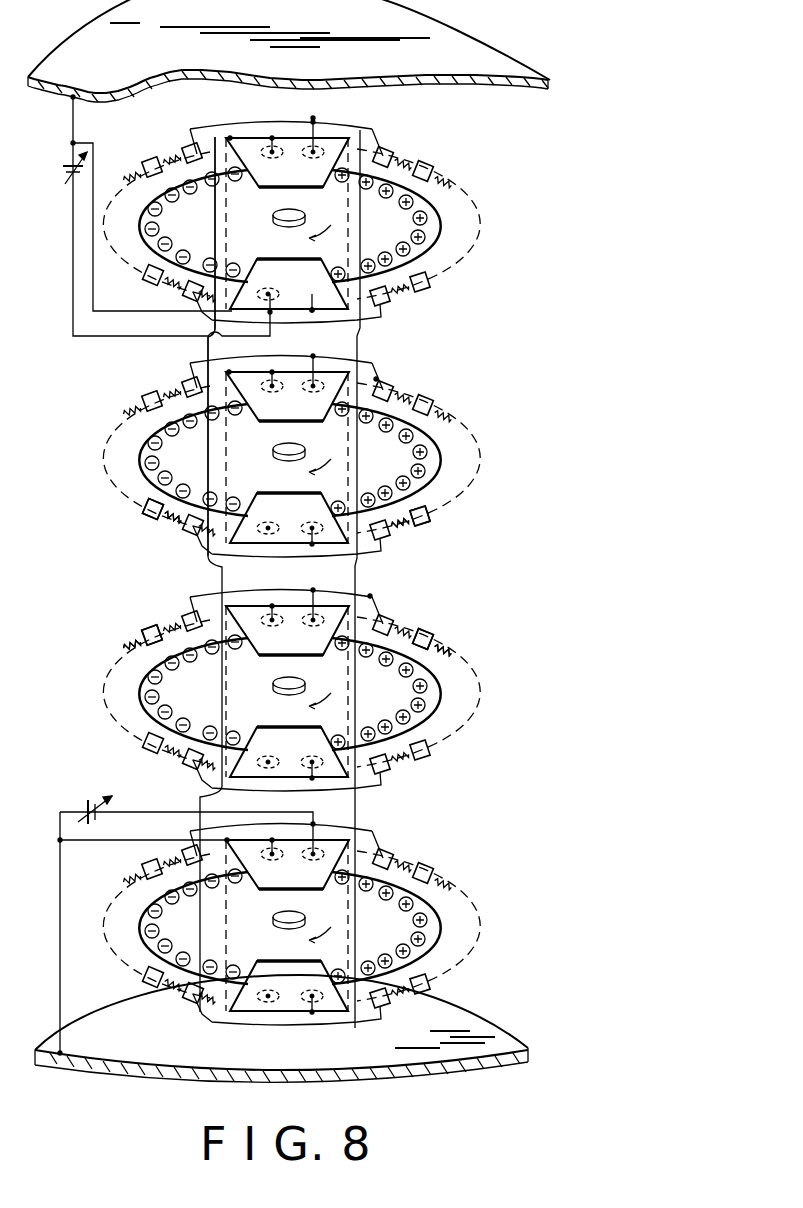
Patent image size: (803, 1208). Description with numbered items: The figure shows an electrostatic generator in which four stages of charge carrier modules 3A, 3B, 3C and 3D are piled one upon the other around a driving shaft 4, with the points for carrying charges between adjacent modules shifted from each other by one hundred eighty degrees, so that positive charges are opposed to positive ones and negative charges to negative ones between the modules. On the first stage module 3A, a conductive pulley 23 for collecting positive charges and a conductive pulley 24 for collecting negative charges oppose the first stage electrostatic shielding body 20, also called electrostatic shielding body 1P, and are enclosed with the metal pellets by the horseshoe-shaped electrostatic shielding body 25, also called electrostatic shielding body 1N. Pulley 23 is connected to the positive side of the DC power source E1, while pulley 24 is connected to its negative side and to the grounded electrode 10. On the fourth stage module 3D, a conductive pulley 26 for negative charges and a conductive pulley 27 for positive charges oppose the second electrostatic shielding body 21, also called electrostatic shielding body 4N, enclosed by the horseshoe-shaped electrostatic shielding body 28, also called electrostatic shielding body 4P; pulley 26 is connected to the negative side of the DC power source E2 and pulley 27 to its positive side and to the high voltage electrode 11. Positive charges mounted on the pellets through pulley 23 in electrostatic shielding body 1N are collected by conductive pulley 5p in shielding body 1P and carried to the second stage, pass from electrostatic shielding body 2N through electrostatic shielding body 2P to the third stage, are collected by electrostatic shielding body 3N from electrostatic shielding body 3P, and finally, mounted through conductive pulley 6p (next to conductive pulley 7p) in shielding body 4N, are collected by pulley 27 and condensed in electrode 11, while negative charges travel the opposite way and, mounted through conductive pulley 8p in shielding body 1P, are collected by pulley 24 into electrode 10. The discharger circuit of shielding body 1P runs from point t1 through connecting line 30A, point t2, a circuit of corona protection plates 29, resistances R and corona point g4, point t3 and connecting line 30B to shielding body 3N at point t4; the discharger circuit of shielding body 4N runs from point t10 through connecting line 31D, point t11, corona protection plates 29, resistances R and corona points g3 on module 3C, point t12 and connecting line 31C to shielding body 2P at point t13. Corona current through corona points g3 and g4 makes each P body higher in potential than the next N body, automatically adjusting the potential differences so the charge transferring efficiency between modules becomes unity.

The grounded electrode 10 is at (281, 1044).
The high voltage electrode 11 is at (480, 87).
The charge carrier module 3A is at (392, 936).
The charge carrier module 3B is at (345, 692).
The charge carrier module 3C is at (398, 470).
The charge carrier module 3D is at (400, 236).
The driving shaft 4 is at (276, 213).
The electrostatic shielding body 1N is at (287, 864).
The electrostatic shielding body 1P is at (289, 986).
The electrostatic shielding body 2N is at (287, 630).
The electrostatic shielding body 2P is at (289, 752).
The electrostatic shielding body 3N is at (287, 396).
The electrostatic shielding body 3P is at (289, 518).
The electrostatic shielding body 4N is at (287, 162).
The electrostatic shielding body 4P is at (289, 284).
The conductive pulley 5p is at (314, 1005).
The conductive pulley 6p is at (318, 118).
The conductive pulley 7p is at (266, 143).
The conductive pulley 8p is at (265, 1003).
The first stage electrostatic shielding body 20 is at (297, 962).
The second electrostatic shielding body 21 is at (326, 190).
The conductive pulley 23 is at (322, 891).
The conductive pulley 24 is at (236, 838).
The horseshoe-shaped electrostatic shielding body 25 is at (258, 891).
The conductive pulley 26 is at (266, 257).
The conductive pulley 27 is at (314, 311).
The horseshoe-shaped electrostatic shielding body 28 is at (327, 264).
The corona protection plates 29 is at (148, 506).
The resistances R is at (170, 520).
The corona points g3 is at (182, 545).
The corona point g4 is at (102, 668).
The connecting line 30A is at (360, 690).
The connecting line 30B is at (223, 560).
The connecting line 31C is at (356, 562).
The connecting line 31D is at (213, 226).
The DC power source E1 is at (185, 914).
The DC power source E2 is at (147, 215).
The point t1 is at (366, 1013).
The point t2 is at (371, 595).
The point t3 is at (238, 746).
The point t4 is at (230, 371).
The point t10 is at (230, 137).
The point t11 is at (202, 548).
The point t12 is at (377, 378).
The point t13 is at (355, 830).